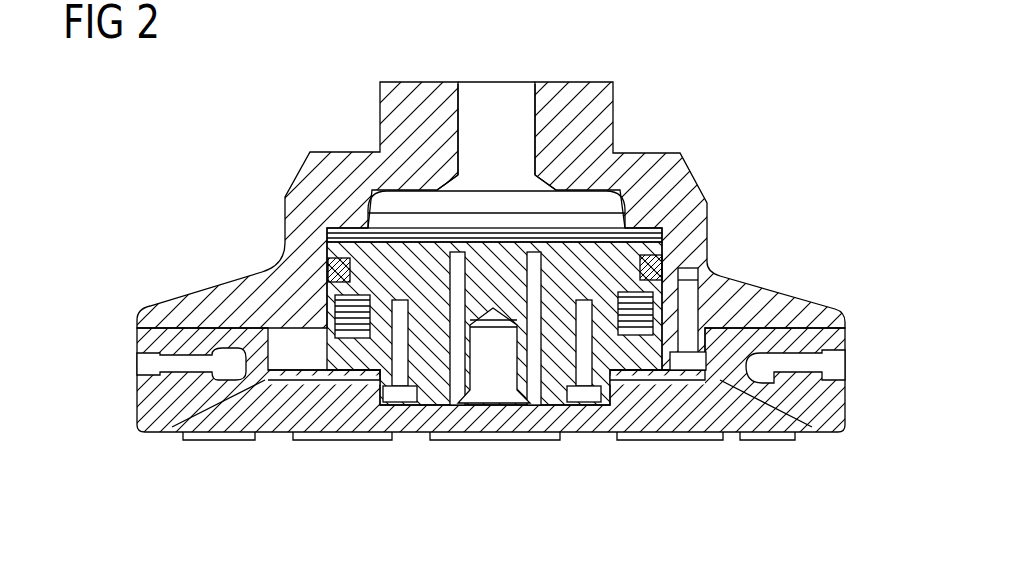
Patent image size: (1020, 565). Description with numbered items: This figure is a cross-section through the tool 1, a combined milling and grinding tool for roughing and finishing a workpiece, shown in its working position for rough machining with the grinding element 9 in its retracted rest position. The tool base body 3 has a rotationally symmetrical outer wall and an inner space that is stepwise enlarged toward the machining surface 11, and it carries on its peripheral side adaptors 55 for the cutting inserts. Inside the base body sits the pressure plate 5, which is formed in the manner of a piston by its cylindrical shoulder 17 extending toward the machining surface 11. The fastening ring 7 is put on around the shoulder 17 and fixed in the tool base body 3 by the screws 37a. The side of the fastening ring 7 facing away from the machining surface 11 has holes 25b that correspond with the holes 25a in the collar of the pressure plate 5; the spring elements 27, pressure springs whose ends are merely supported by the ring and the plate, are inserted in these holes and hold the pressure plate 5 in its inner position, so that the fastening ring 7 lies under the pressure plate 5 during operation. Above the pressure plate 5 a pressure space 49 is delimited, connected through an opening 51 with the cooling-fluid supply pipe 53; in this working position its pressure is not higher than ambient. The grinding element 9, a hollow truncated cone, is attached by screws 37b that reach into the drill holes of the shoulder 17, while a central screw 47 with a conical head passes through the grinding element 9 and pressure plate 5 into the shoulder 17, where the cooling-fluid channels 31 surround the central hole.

The tool 1 is at (655, 102).
The tool base body 3 is at (668, 184).
The pressure plate 5 is at (650, 162).
The fastening ring 7 is at (722, 320).
The grinding element 9 is at (770, 428).
The machining surface 11 is at (350, 442).
The cylindrical shoulder 17 is at (428, 412).
The holes 25a is at (326, 332).
The holes 25b is at (335, 322).
The spring elements 27 is at (326, 336).
The cooling-fluid channels 31 is at (532, 362).
The screws 37a is at (700, 307).
The screws 37b is at (585, 402).
The central screw 47 is at (490, 362).
The pressure space 49 is at (402, 216).
The opening 51 is at (496, 182).
The cooling-fluid supply pipe 53 is at (504, 122).
The adaptors 55 is at (846, 367).